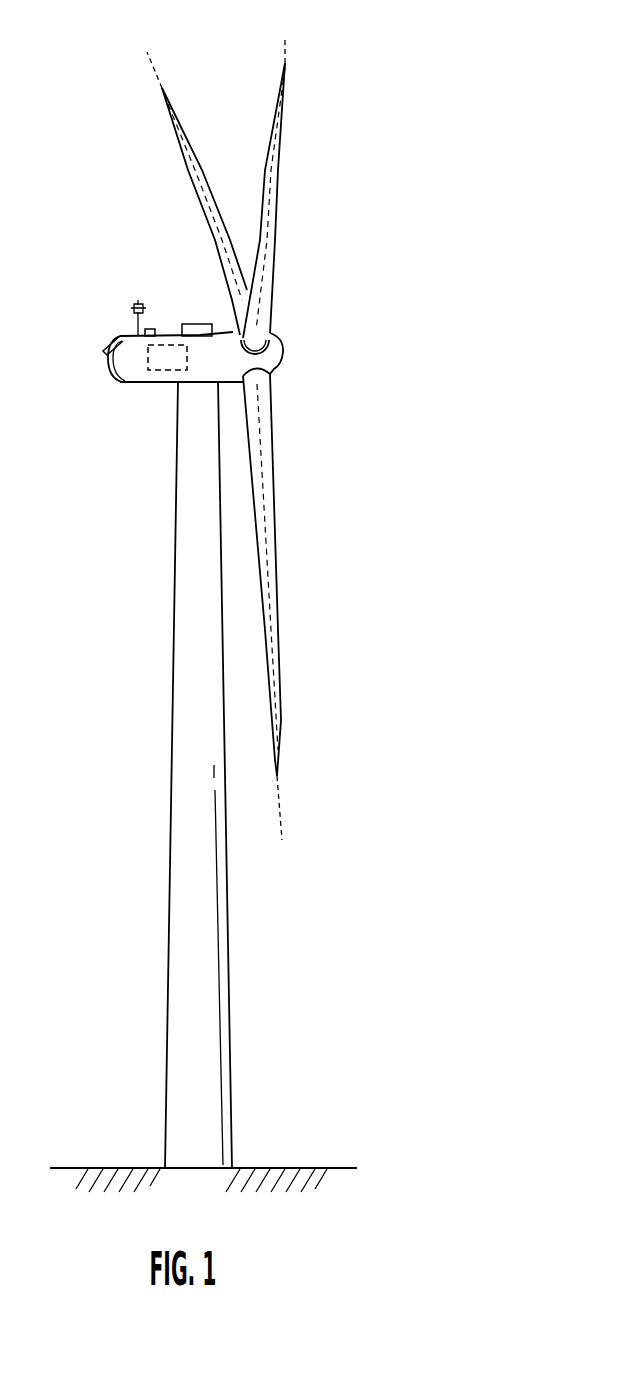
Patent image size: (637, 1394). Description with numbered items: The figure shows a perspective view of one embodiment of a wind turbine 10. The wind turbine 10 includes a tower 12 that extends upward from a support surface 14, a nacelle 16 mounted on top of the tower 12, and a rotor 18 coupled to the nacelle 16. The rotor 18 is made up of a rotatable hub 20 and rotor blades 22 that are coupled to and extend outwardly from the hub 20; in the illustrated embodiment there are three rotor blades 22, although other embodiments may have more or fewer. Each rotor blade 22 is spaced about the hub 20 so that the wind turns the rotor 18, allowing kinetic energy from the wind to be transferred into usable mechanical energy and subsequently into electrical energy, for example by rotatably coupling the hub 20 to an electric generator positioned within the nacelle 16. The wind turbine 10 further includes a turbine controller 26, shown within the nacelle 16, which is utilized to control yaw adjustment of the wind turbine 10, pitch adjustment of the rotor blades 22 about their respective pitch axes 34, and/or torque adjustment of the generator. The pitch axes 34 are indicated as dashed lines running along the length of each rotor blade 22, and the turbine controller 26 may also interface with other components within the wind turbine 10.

The wind turbine 10 is at (460, 100).
The tower 12 is at (183, 838).
The support surface 14 is at (122, 1167).
The nacelle 16 is at (143, 383).
The rotor 18 is at (292, 322).
The rotatable hub 20 is at (283, 357).
The rotor blade 22 is at (208, 193).
The turbine controller 26 is at (165, 336).
The pitch axis 34 is at (153, 63).